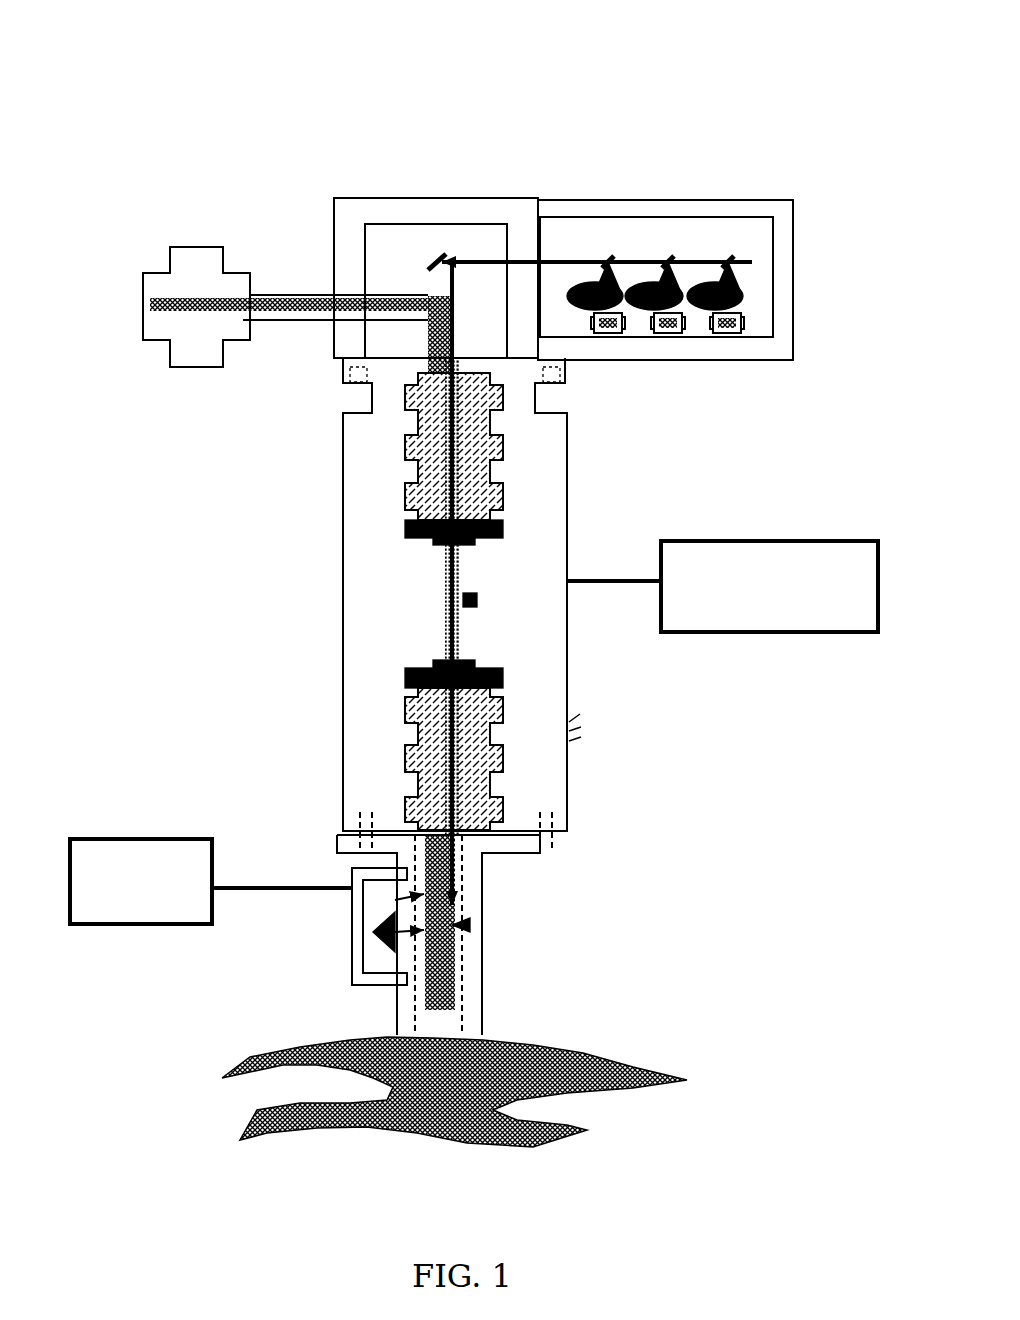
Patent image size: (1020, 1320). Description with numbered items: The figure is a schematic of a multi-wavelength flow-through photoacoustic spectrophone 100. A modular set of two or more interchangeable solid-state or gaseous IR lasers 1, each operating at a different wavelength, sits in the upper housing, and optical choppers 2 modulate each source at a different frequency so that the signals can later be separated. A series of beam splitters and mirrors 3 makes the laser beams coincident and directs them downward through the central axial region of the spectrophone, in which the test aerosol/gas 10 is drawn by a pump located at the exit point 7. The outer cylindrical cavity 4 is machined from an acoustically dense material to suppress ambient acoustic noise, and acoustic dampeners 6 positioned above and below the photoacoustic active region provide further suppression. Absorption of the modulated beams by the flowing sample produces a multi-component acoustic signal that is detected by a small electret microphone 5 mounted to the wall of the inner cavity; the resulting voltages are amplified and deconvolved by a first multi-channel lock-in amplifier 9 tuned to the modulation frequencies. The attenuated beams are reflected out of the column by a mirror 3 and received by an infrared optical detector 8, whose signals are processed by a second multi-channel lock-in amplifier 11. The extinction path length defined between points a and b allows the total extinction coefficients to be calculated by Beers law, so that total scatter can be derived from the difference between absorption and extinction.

The multi-wavelength flow-through photoacoustic spectrophone 100 is at (438, 112).
The lasers 1 is at (636, 312).
The optical choppers 2 is at (615, 282).
The beam splitters and mirrors 3 is at (728, 247).
The outer cylindrical cavity 4 is at (340, 582).
The electret microphone 5 is at (468, 597).
The acoustic dampeners 6 is at (597, 622).
The exit point 7 is at (203, 330).
The infrared optical detector 8 is at (352, 870).
The first multi-channel lock-in amplifier 9 is at (723, 586).
The test aerosol/gas 10 is at (454, 1078).
The second multi-channel lock-in amplifier 11 is at (211, 881).
The extinction path length point a is at (412, 898).
The extinction path length point b is at (430, 298).